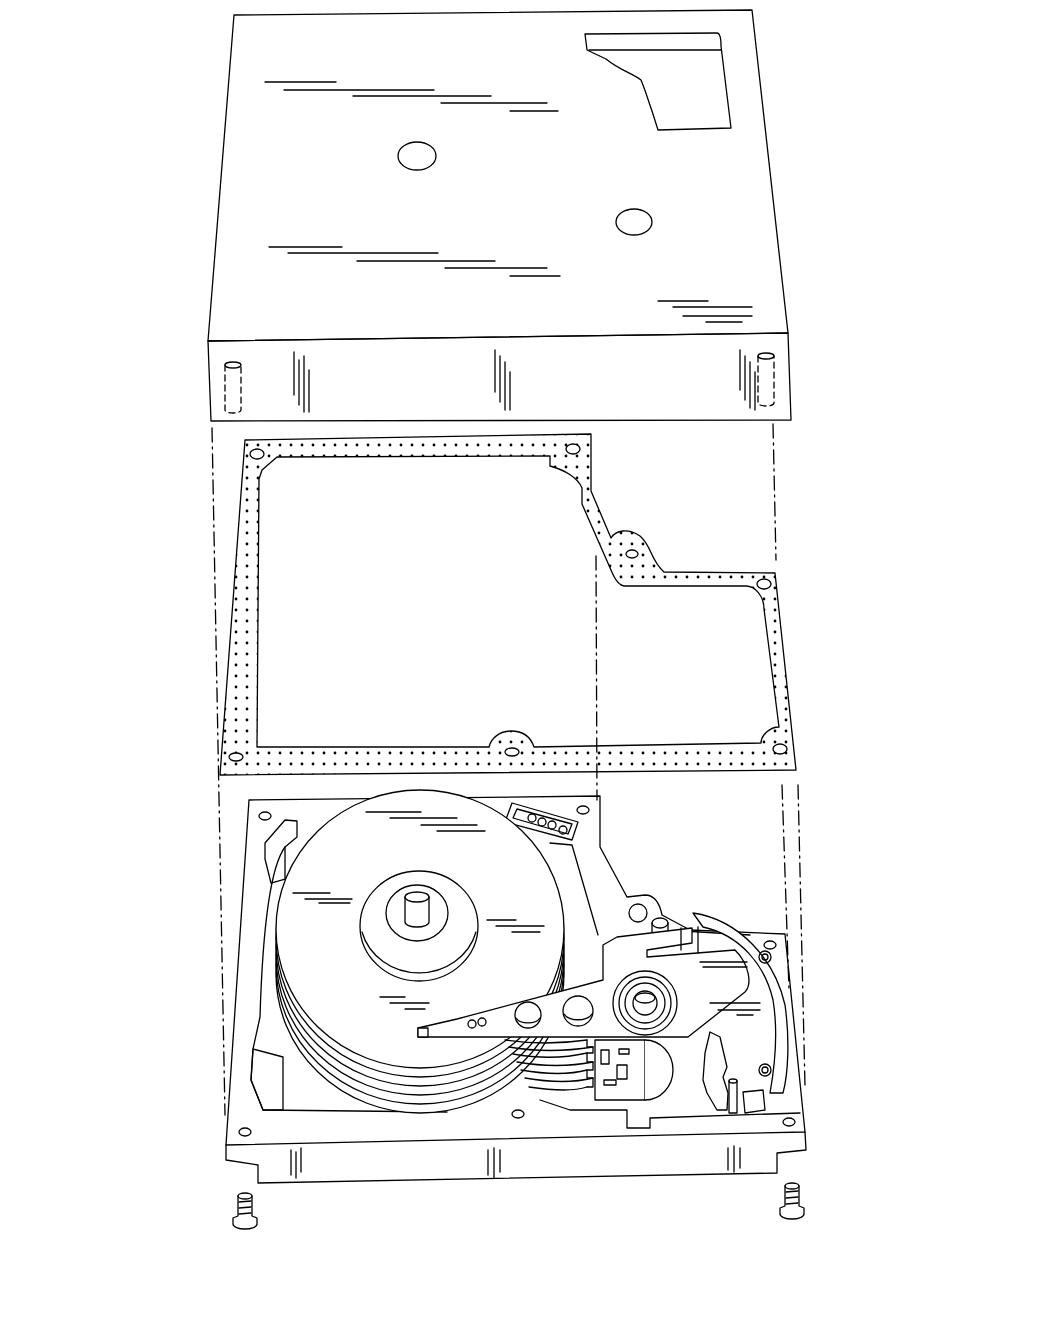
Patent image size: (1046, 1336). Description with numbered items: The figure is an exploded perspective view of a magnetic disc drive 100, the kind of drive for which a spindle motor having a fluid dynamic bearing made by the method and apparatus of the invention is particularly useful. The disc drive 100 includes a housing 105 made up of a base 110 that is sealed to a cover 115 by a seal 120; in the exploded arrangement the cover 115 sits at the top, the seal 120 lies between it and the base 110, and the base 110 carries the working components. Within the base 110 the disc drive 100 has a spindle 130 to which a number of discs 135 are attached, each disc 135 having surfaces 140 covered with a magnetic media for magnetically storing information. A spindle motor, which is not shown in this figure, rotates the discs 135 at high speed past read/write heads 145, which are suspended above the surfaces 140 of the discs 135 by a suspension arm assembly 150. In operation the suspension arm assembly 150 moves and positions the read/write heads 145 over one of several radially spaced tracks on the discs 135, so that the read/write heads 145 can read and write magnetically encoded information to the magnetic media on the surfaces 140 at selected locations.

The disc drive 100 is at (166, 70).
The housing 105 is at (787, 76).
The base 110 is at (796, 1033).
The cover 115 is at (773, 185).
The seal 120 is at (788, 666).
The spindle 130 is at (398, 928).
The discs 135 is at (287, 882).
The surfaces 140 is at (362, 1002).
The read/write heads 145 is at (425, 1037).
The suspension arm assembly 150 is at (538, 1100).